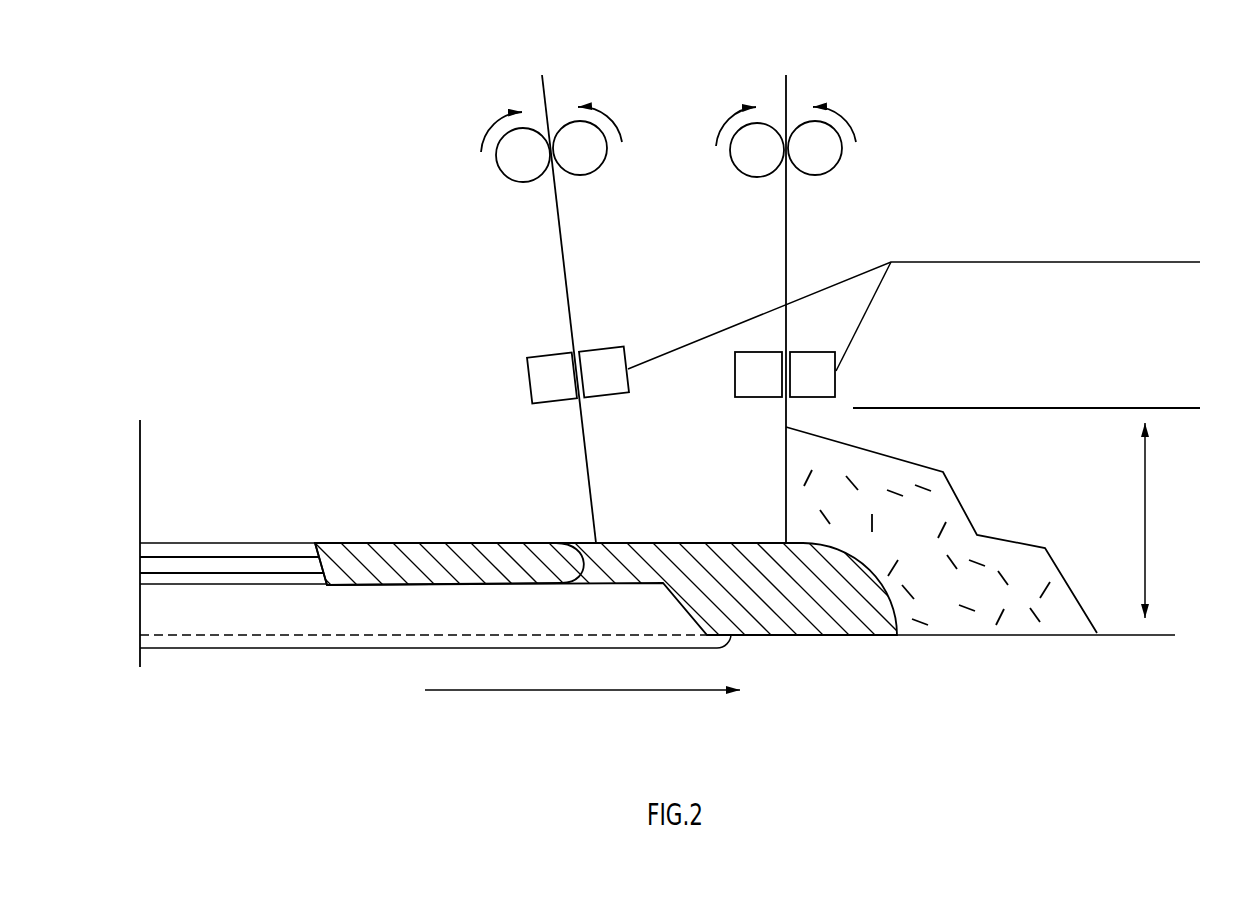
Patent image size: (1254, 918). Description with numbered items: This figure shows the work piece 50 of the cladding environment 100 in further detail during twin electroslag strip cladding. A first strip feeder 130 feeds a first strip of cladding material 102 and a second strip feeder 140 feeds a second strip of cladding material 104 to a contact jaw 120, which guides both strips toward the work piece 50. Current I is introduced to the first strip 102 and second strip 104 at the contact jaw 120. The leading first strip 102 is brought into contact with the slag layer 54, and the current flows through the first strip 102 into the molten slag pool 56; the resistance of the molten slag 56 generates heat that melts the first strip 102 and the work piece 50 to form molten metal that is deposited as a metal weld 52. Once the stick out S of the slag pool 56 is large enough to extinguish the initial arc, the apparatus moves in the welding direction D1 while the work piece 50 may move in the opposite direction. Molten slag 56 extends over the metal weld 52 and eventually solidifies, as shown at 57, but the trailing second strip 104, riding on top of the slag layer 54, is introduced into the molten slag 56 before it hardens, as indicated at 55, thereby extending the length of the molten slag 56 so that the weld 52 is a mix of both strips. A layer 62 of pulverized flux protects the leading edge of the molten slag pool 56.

The cladding environment 100 is at (201, 182).
The second strip feeder 140 is at (496, 156).
The first strip feeder 130 is at (842, 148).
The second strip of cladding material 104 is at (563, 250).
The first strip of cladding material 102 is at (785, 228).
The contact jaw 120 is at (558, 404).
The slag layer 54 is at (365, 524).
The introduction of second strip into molten slag 55 is at (455, 543).
The molten slag pool 56 is at (733, 577).
The solidified slag 57 is at (275, 565).
The metal weld 52 is at (343, 618).
The layer of pulverized flux 62 is at (897, 545).
The work piece 50 is at (1086, 685).
The current I is at (914, 316).
The stick out of slag pool S is at (1175, 537).
The welding direction D1 is at (582, 675).